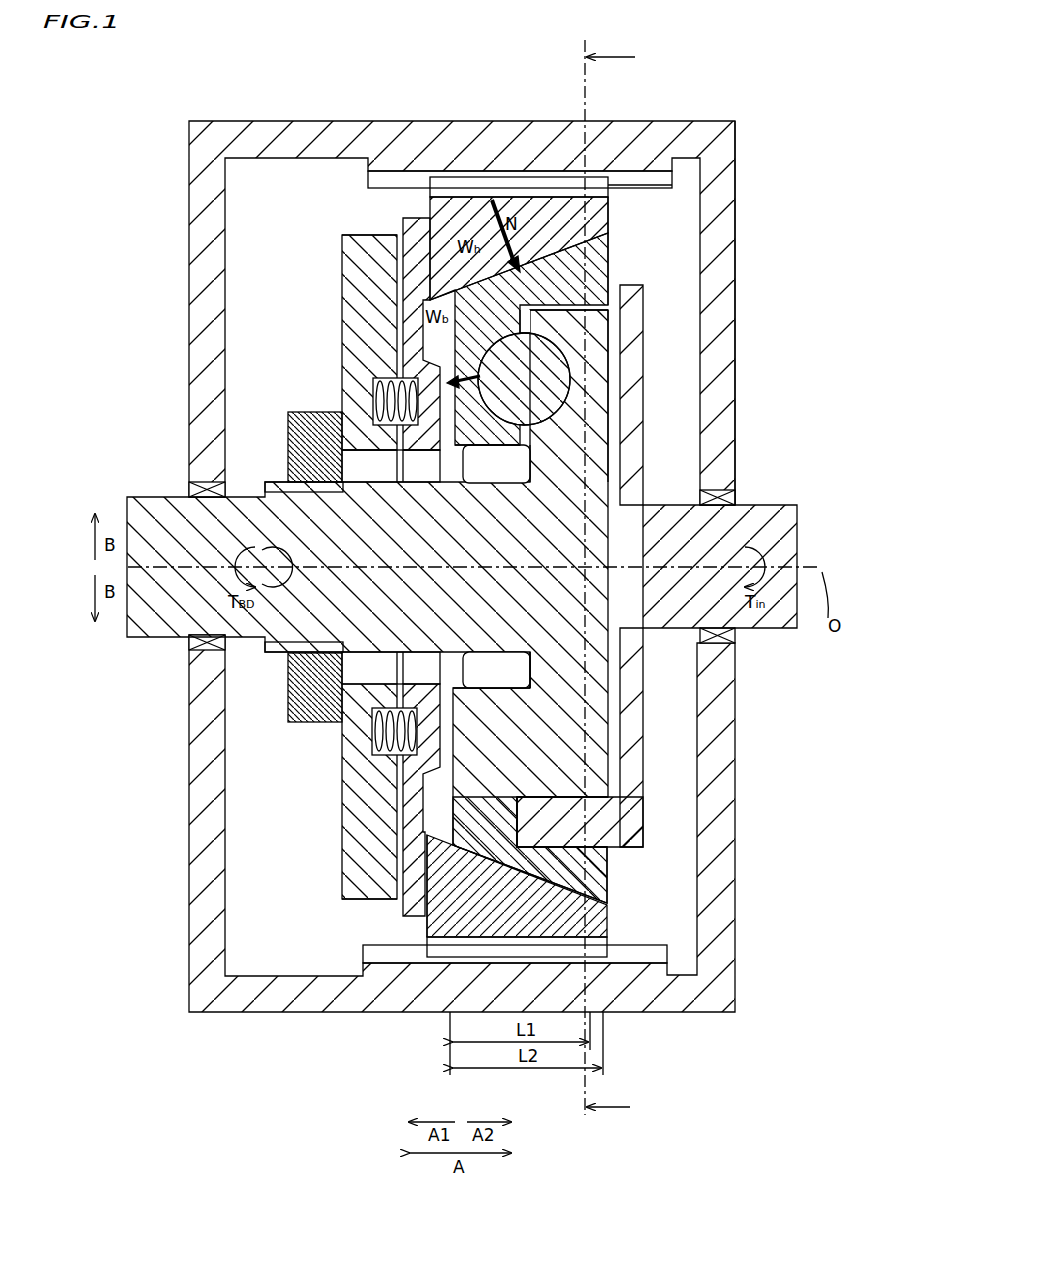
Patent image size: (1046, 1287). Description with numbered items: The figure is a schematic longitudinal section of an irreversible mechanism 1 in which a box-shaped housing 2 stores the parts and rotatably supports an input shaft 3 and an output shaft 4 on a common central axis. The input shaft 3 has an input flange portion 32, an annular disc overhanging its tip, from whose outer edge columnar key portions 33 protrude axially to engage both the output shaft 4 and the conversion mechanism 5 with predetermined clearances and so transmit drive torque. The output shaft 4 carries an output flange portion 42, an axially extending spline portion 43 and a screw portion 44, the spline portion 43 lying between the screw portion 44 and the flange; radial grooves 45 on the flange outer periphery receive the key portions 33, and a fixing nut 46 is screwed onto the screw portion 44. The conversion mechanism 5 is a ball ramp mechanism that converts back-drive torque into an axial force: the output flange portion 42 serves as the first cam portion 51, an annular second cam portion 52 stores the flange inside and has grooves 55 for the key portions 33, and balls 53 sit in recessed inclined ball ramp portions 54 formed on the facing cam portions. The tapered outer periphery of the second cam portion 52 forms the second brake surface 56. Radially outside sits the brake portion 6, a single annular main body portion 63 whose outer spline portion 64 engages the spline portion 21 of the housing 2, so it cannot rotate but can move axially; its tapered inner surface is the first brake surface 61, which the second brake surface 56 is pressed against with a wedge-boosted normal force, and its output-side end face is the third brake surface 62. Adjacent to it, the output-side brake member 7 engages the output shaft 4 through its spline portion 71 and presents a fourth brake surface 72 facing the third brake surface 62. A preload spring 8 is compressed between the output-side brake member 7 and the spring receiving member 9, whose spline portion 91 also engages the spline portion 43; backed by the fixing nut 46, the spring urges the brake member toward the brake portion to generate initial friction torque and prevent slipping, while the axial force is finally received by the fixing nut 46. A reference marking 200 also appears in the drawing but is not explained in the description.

The irreversible mechanism 1 is at (752, 110).
The housing 2 is at (297, 138).
The spline portion 21 is at (385, 171).
The input shaft 3 is at (790, 520).
The input flange portion 32 is at (630, 395).
The key portions 33 is at (590, 822).
The output shaft 4 is at (175, 492).
The output flange portion 42 is at (715, 410).
The spline portion 43 is at (462, 487).
The screw portion 44 is at (275, 482).
The grooves 45 is at (560, 795).
The fixing nut 46 is at (300, 420).
The conversion mechanism 5 is at (640, 262).
The first cam portion 51 is at (585, 340).
The second cam portion 52 is at (610, 240).
The balls 53 is at (625, 365).
The ball ramp portions 54 is at (490, 445).
The grooves 55 is at (555, 815).
The second brake surface 56 is at (647, 171).
The brake portion 6 is at (466, 186).
The first brake surface 61 is at (540, 248).
The third brake surface 62 is at (413, 215).
The main body portion 63 is at (488, 197).
The spline portion 64 is at (568, 190).
The output-side brake member 7 is at (410, 222).
The spline portion 71 is at (415, 456).
The fourth brake surface 72 is at (380, 248).
The preload spring 8 is at (380, 390).
The spring receiving member 9 is at (400, 302).
The spline portion 91 is at (370, 456).
The reference plane 200 is at (614, 584).